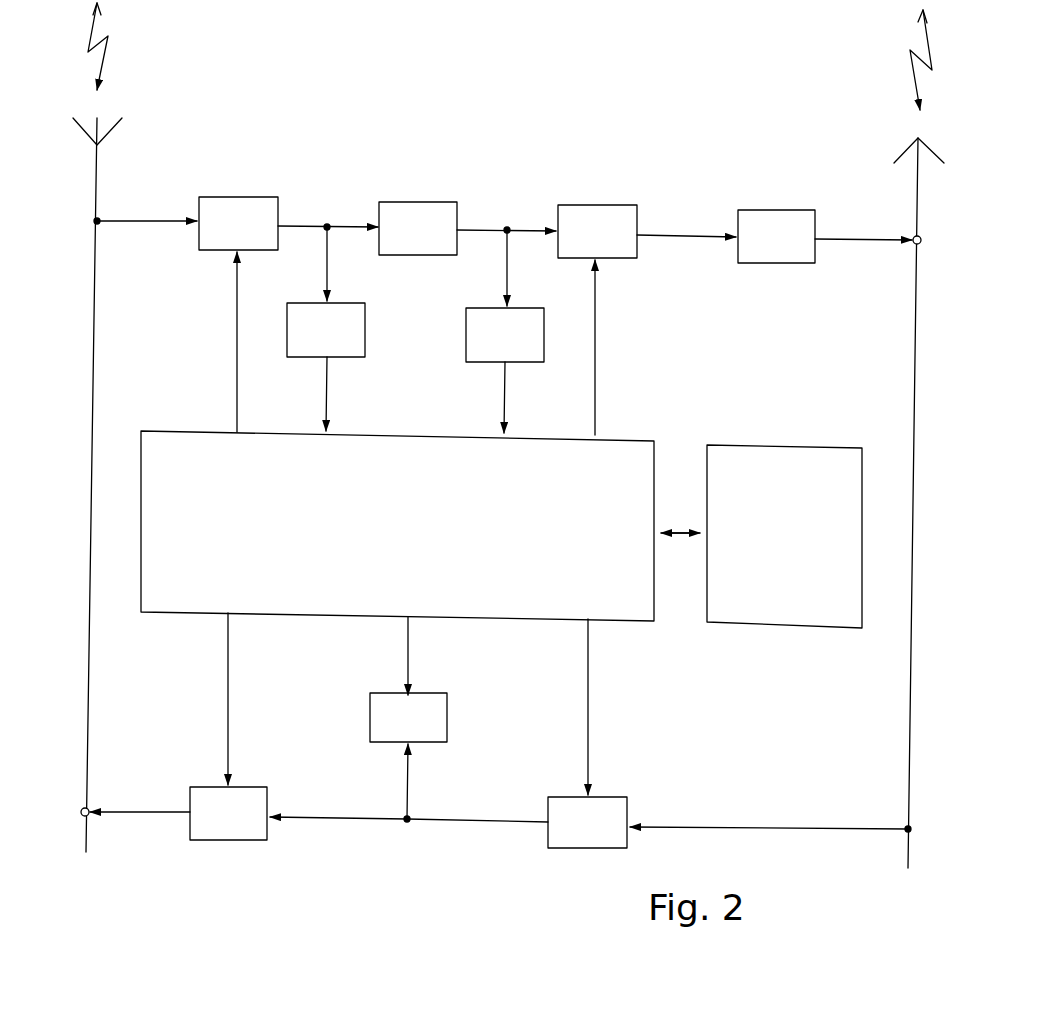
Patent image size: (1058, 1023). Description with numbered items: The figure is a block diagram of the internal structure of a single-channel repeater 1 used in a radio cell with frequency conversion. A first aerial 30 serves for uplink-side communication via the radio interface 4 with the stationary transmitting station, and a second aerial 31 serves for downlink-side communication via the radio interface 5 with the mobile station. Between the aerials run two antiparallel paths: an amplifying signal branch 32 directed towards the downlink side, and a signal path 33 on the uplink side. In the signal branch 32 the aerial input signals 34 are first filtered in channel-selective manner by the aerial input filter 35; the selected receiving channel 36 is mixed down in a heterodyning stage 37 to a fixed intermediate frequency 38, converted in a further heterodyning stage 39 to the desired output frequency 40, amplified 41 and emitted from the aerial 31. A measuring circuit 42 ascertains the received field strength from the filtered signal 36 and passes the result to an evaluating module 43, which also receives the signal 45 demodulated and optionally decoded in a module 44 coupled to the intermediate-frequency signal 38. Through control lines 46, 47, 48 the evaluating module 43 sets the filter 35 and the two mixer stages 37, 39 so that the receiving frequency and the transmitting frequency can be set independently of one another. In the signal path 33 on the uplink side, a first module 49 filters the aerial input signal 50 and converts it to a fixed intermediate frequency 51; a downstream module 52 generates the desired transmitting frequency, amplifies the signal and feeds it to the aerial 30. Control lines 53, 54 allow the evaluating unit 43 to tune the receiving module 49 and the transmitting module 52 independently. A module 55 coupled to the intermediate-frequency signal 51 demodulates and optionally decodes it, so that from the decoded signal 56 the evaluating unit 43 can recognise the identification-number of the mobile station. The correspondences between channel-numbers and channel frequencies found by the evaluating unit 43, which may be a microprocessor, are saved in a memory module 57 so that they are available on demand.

The single-channel repeater 1 is at (370, 66).
The radio interface 4 is at (108, 50).
The radio interface 5 is at (910, 70).
The first aerial 30 is at (97, 178).
The second aerial 31 is at (917, 183).
The amplifying signal branch 32 is at (690, 252).
The signal path 33 is at (684, 811).
The aerial input signals 34 is at (148, 226).
The aerial input filter 35 is at (240, 210).
The selected receiving channel 36 is at (316, 222).
The heterodyning stage 37 is at (416, 218).
The intermediate frequency 38 is at (493, 228).
The heterodyning stage 39 is at (594, 218).
The output frequency 40 is at (682, 236).
The amplifier 41 is at (784, 220).
The measuring circuit 42 is at (300, 348).
The evaluating module 43 is at (397, 526).
The module 44 is at (480, 352).
The demodulated signal 45 is at (505, 397).
The control line 46 is at (236, 393).
The control line 47 is at (326, 395).
The control line 48 is at (596, 398).
The first module 49 is at (590, 840).
The aerial input signal 50 is at (824, 830).
The intermediate frequency 51 is at (390, 823).
The module 52 is at (222, 842).
The control line 53 is at (587, 657).
The control line 54 is at (228, 657).
The module 55 is at (372, 716).
The decoded signal 56 is at (409, 658).
The memory module 57 is at (761, 536).